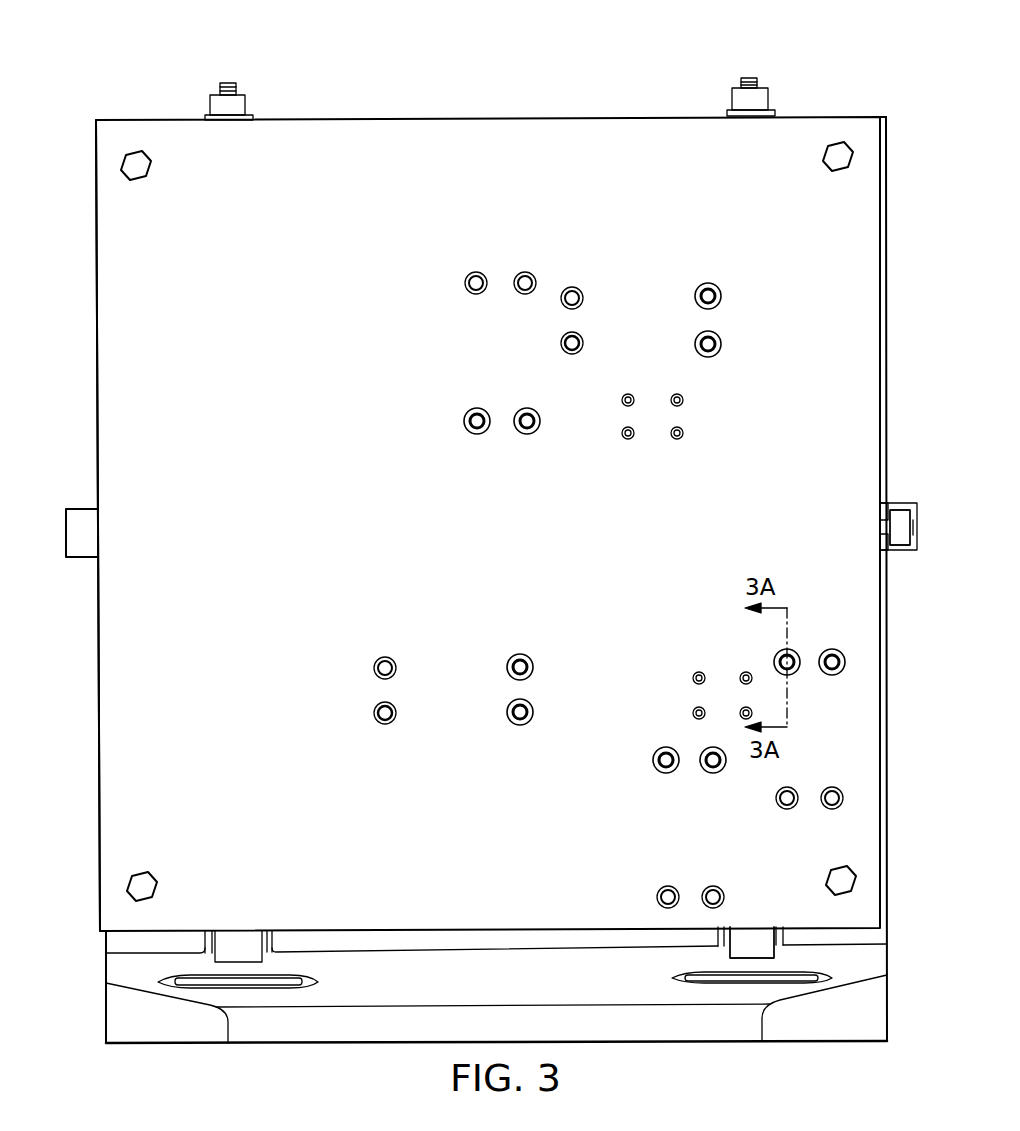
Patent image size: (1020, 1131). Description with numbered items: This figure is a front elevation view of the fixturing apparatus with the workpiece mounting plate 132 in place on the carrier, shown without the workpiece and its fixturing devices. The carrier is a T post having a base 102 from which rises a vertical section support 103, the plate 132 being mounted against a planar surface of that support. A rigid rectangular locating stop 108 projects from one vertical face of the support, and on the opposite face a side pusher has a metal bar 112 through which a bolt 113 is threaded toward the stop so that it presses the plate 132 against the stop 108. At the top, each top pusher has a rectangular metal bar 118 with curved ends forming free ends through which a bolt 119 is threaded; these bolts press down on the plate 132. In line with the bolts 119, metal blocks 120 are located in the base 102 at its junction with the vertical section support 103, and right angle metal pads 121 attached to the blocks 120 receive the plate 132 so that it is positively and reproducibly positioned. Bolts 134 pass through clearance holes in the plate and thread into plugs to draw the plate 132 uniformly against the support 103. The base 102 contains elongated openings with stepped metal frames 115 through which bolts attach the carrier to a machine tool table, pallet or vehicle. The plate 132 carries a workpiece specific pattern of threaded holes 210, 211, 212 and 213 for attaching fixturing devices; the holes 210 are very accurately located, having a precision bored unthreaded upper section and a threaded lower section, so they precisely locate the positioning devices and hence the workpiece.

The base 102 is at (314, 1045).
The vertical section support 103 is at (885, 790).
The locating stop 108 is at (88, 514).
The metal bar 112 is at (898, 548).
The bolt 113 is at (915, 521).
The stepped metal frame 115 is at (672, 982).
The rectangular metal bar 118 is at (240, 107).
The bolt 119 is at (231, 82).
The metal block 120 is at (735, 950).
The right angle metal pad 121 is at (738, 933).
The plate 132 is at (98, 312).
The bolt 134 is at (140, 165).
The hole 210 is at (532, 670).
The threaded hole 211 is at (520, 273).
The threaded hole 212 is at (685, 435).
The threaded hole 213 is at (720, 298).